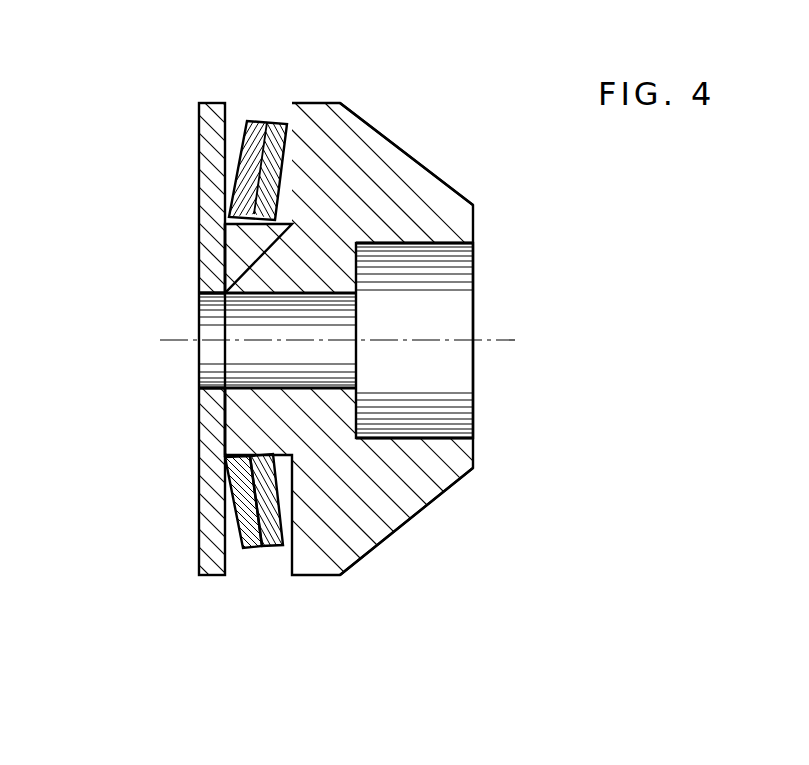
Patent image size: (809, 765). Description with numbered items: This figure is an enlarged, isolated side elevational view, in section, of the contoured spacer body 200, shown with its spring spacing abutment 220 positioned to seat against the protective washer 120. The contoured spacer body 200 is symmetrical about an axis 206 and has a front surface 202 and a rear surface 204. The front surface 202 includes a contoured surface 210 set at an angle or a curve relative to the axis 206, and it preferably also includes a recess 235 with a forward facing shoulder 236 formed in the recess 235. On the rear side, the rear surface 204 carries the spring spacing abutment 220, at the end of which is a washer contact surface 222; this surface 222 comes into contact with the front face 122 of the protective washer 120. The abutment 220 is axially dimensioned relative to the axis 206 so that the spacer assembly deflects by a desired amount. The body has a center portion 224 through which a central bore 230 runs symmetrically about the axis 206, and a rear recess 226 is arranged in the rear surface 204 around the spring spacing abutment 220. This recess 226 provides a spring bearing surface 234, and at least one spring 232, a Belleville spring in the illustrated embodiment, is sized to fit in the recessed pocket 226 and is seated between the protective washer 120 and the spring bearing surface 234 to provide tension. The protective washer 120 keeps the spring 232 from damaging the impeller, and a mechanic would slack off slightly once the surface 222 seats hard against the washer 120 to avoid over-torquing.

The protective washer 120 is at (201, 576).
The front face 122 is at (225, 222).
The contoured spacer body 200 is at (570, 566).
The front surface 202 is at (438, 175).
The rear surface 204 is at (216, 270).
The axis 206 is at (183, 338).
The contoured surface 210 is at (403, 152).
The spring spacing abutment 220 is at (245, 373).
The washer contact surface 222 is at (224, 424).
The center portion 224 is at (410, 503).
The rear recess 226 is at (262, 546).
The central bore 230 is at (345, 358).
The spring 232 is at (242, 549).
The spring bearing surface 234 is at (268, 120).
The recess 235 is at (440, 252).
The forward facing shoulder 236 is at (357, 412).